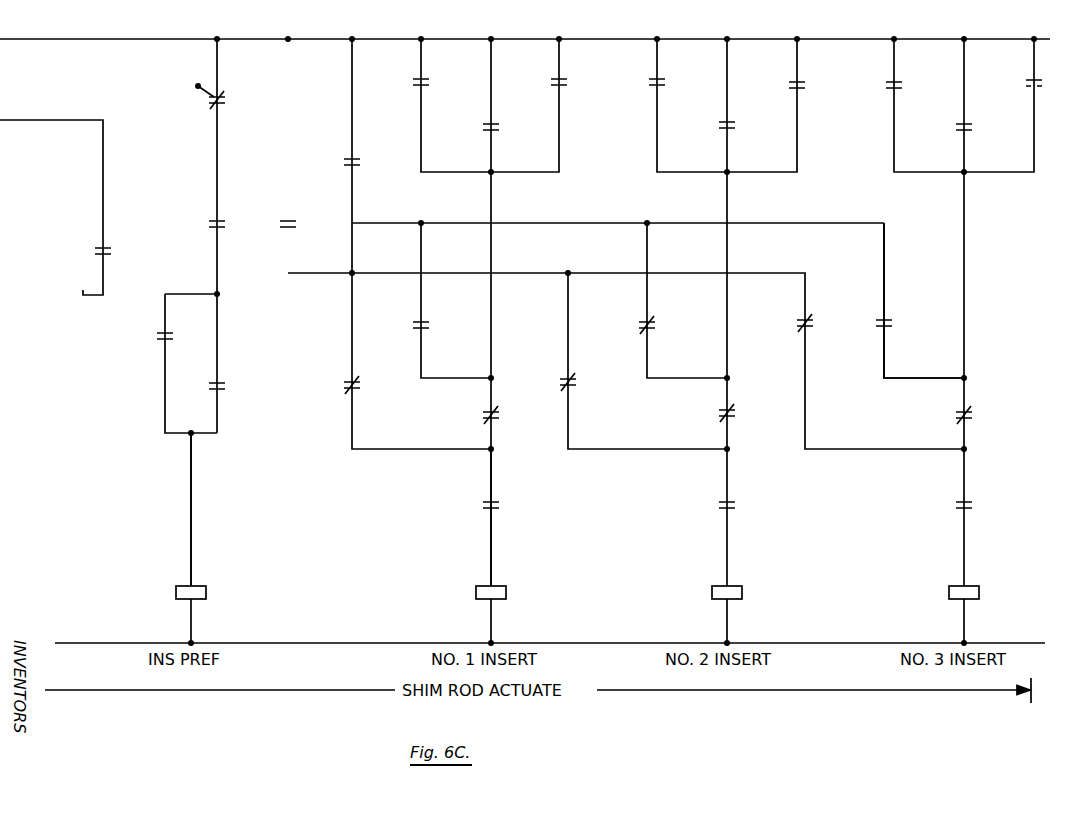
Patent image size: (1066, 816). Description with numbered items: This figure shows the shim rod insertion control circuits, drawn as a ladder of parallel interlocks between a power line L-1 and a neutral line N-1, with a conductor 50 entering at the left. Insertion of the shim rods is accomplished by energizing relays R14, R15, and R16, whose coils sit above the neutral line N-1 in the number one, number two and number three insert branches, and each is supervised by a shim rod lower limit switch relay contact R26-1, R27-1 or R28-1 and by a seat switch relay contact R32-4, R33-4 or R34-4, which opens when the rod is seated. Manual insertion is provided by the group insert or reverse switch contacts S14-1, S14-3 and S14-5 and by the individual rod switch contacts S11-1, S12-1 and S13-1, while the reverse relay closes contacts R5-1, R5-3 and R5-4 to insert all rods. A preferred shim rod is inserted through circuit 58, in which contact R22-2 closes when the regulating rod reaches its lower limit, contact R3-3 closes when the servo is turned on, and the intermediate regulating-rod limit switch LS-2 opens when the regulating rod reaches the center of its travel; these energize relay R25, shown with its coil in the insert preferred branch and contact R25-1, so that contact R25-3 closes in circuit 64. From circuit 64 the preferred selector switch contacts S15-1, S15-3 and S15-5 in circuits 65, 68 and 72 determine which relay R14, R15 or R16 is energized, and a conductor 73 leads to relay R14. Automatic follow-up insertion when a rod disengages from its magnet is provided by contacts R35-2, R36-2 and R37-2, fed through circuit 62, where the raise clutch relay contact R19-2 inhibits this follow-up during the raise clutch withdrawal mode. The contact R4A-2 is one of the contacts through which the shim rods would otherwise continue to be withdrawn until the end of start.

The power line L-1 is at (118, 39).
The neutral line N-1 is at (324, 643).
The conductor 50 is at (16, 120).
The intermediate regulating-rod limit switch LS-2 is at (221, 98).
The relay R3 contact R3-3 is at (221, 222).
The raise clutch relay contact R19-2 is at (292, 222).
The relay R4A contact R4A-2 is at (107, 249).
The circuit 62 is at (288, 258).
The circuit 64 is at (392, 223).
The relay R25 contact R25-3 is at (356, 160).
The group insert switch contact S14-1 is at (425, 80).
The individual rod switch contact S11-1 is at (495, 125).
The reverse relay contact R5-1 is at (563, 80).
The group insert switch contact S14-3 is at (661, 80).
The individual rod switch contact S12-1 is at (731, 123).
The reverse relay contact R5-3 is at (801, 83).
The group insert switch contact S14-5 is at (898, 83).
The individual rod switch contact S13-1 is at (968, 125).
The reverse relay contact R5-4 is at (1030, 80).
The relay R25 contact R25-1 is at (162, 333).
The relay R22 contact R22-2 is at (221, 384).
The circuit 58 is at (191, 518).
The relay R25 is at (200, 586).
The preferred selector switch contact S15-1 is at (425, 323).
The circuit 65 is at (421, 350).
The relay R35 contact R35-2 is at (356, 383).
The seat switch relay contact R32-4 is at (495, 413).
The lower limit switch relay contact R26-1 is at (495, 503).
The conductor 73 is at (491, 534).
The relay R14 is at (498, 586).
The preferred selector switch contact S15-3 is at (651, 323).
The circuit 68 is at (647, 350).
The relay R36 contact R36-2 is at (572, 380).
The seat switch relay contact R33-4 is at (723, 410).
The lower limit switch relay contact R27-1 is at (731, 503).
The relay R15 is at (734, 586).
The relay R37 contact R37-2 is at (809, 321).
The preferred selector switch contact S15-5 is at (888, 321).
The circuit 72 is at (884, 350).
The seat switch relay contact R34-4 is at (990, 408).
The lower limit switch relay contact R28-1 is at (968, 503).
The relay R16 is at (971, 586).